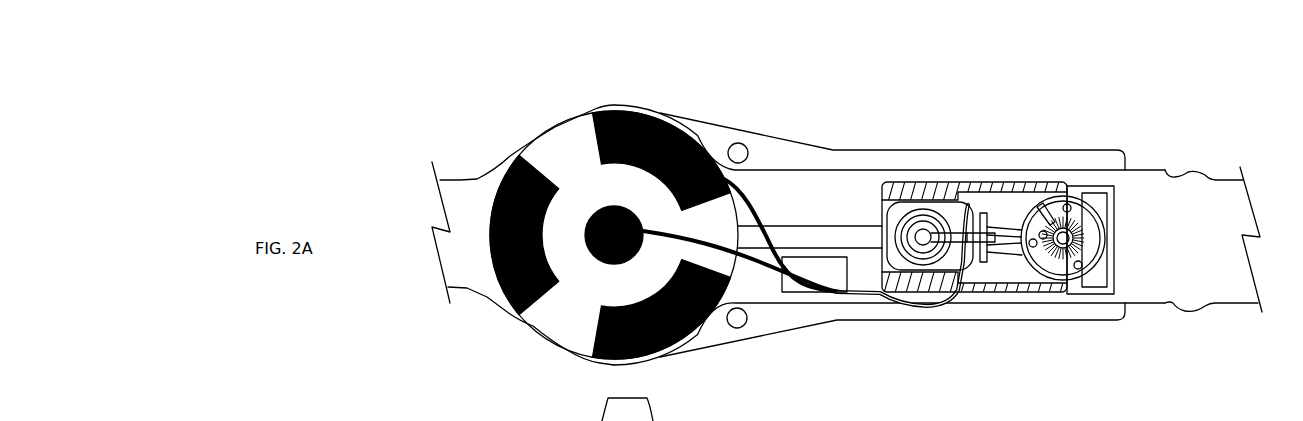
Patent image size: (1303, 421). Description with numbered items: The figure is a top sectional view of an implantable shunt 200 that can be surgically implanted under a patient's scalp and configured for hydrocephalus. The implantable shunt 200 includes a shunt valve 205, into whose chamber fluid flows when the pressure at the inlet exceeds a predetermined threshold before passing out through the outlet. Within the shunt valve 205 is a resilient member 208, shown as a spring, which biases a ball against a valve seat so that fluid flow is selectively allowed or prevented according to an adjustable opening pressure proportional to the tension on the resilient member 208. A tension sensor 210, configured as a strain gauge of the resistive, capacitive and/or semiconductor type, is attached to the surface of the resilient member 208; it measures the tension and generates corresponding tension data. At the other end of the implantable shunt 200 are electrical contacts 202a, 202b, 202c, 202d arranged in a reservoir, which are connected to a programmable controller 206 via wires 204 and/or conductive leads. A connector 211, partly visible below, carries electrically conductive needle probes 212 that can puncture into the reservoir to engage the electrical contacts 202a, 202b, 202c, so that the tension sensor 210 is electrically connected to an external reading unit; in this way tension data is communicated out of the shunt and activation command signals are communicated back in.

The implantable shunt 200 is at (860, 65).
The electrical contact 202a is at (492, 213).
The electrical contact 202b is at (663, 117).
The electrical contact 202c is at (598, 333).
The electrical contact 202d is at (597, 210).
The wires 204 is at (757, 200).
The shunt valve 205 is at (1118, 192).
The programmable controller 206 is at (818, 257).
The resilient member 208 is at (1008, 220).
The tension sensor 210 is at (970, 195).
The connector 211 is at (721, 420).
The gear 212 is at (1093, 198).